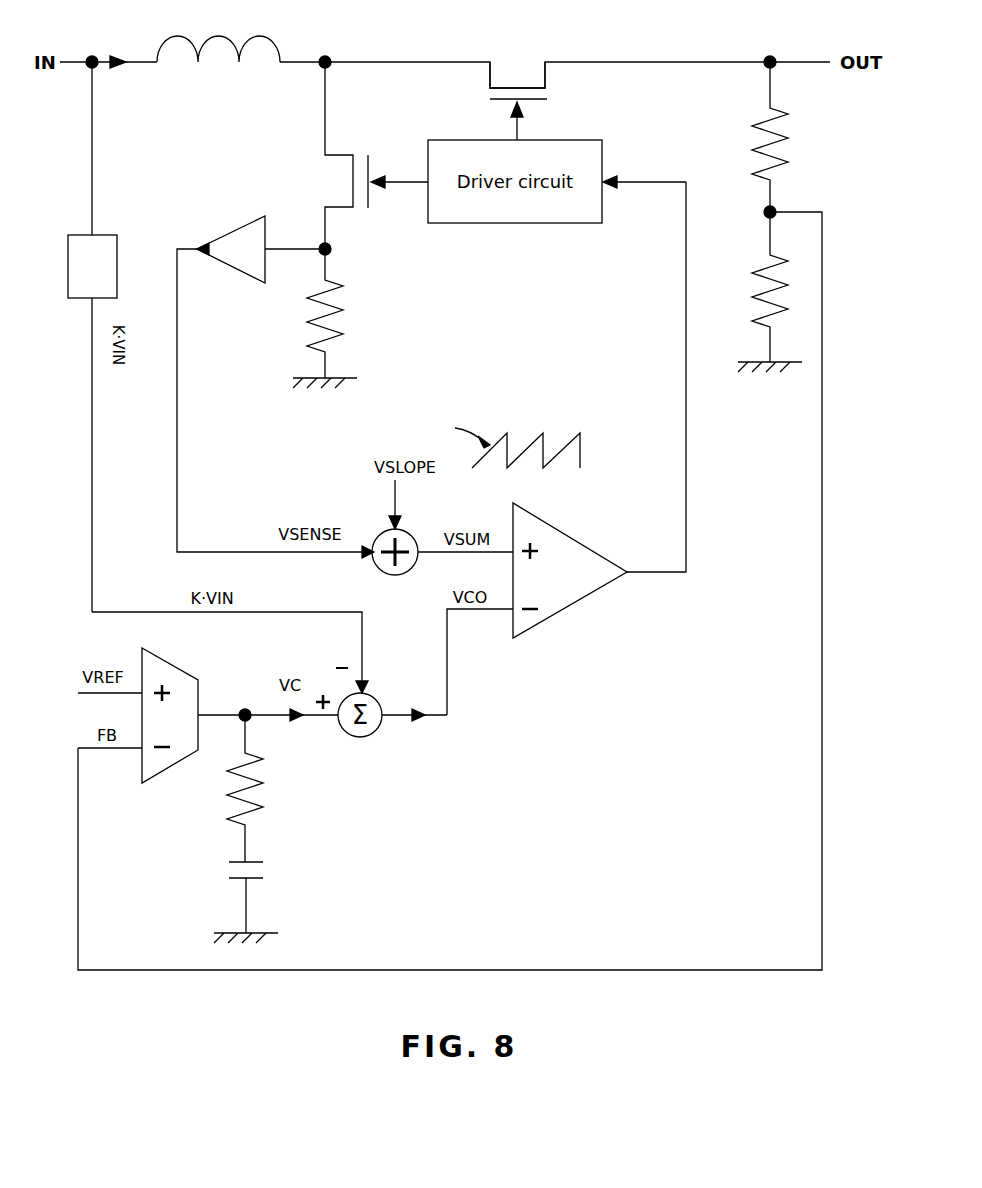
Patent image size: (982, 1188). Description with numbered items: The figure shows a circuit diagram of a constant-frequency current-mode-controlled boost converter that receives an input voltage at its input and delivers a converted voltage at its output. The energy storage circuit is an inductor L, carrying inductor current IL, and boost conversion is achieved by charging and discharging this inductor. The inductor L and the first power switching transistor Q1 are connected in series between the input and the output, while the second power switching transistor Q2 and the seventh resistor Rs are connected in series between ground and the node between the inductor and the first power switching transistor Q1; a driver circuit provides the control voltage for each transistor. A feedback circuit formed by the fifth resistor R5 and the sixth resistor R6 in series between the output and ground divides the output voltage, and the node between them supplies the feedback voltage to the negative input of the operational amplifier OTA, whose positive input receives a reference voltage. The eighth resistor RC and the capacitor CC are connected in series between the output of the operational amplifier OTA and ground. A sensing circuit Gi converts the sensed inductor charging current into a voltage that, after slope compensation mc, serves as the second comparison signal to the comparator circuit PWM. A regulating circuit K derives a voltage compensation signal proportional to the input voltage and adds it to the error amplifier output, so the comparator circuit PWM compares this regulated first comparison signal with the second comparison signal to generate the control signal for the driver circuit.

The inductor L is at (218, 36).
The inductor current IL is at (122, 49).
The first power switching transistor Q1 is at (518, 87).
The second power switching transistor Q2 is at (365, 155).
The sensing circuit Gi is at (261, 249).
The seventh resistor Rs is at (340, 321).
The regulating circuit K is at (92, 337).
The slope compensation mc is at (511, 438).
The comparator circuit PWM is at (570, 570).
The operational amplifier OTA is at (170, 715).
The eighth resistor RC is at (270, 788).
The capacitor CC is at (264, 902).
The fifth resistor R5 is at (788, 140).
The sixth resistor R6 is at (764, 295).